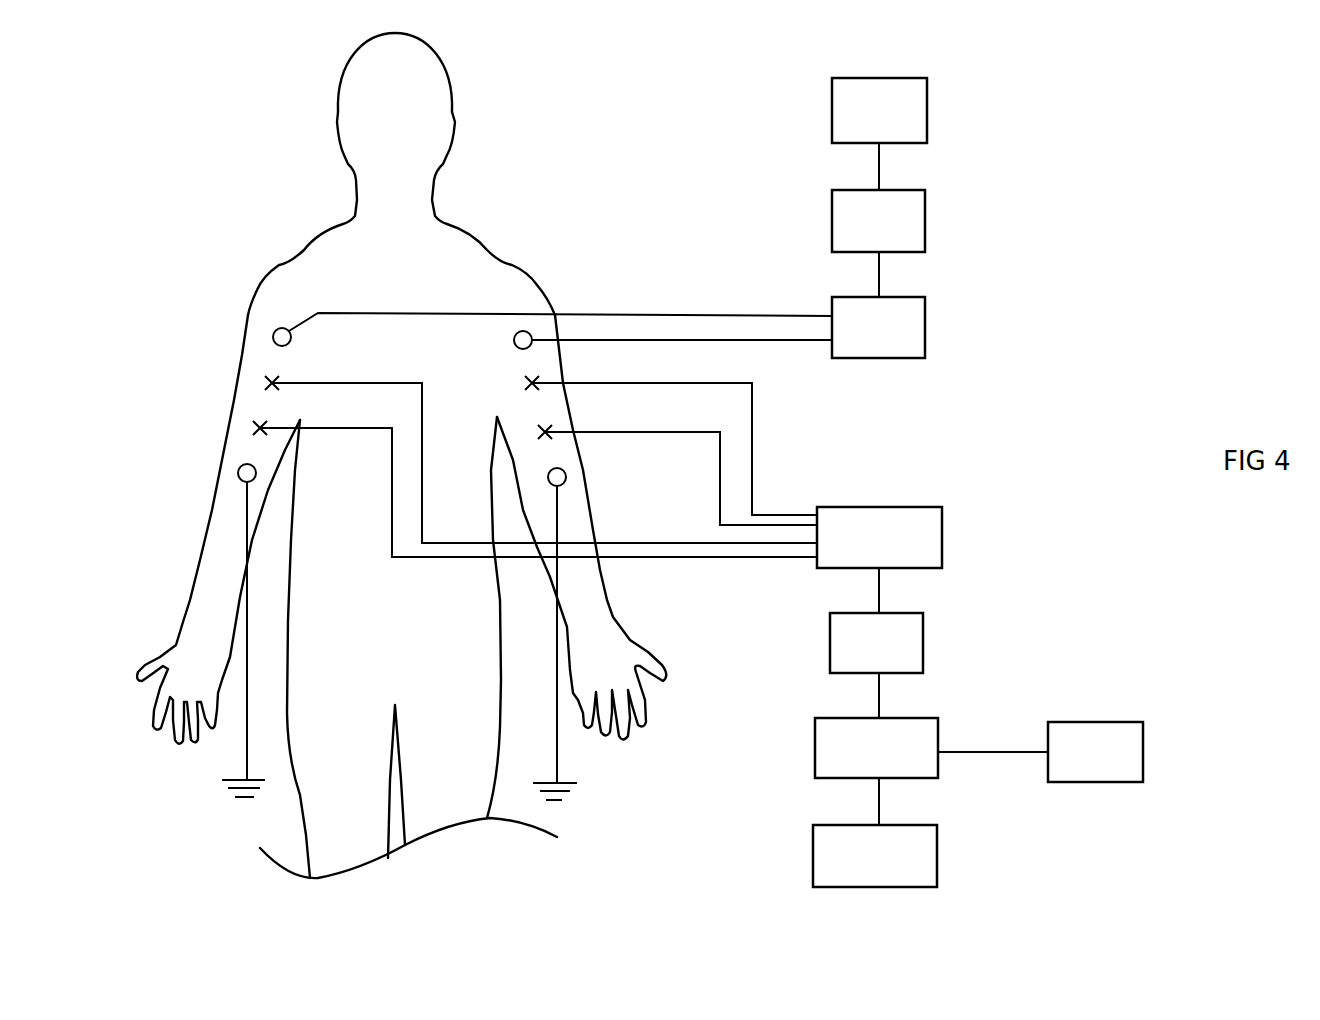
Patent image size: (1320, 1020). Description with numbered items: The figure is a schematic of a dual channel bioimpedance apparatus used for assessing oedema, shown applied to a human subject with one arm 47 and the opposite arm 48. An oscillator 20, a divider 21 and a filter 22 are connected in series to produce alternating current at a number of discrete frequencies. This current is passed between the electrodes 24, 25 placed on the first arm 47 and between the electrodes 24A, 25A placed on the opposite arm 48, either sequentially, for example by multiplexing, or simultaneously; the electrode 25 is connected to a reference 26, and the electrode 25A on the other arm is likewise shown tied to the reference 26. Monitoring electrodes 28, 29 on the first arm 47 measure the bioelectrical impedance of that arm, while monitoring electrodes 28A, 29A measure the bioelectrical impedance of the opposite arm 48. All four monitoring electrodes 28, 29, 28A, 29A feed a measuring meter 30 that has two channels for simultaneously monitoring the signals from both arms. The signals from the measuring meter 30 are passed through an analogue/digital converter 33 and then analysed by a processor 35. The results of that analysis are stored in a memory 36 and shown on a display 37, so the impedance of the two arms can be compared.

The oscillator 20 is at (928, 113).
The divider 21 is at (926, 221).
The filter 22 is at (926, 330).
The electrode 24 is at (272, 332).
The electrode 24A is at (530, 333).
The electrode 25 is at (238, 472).
The electrode 25A is at (567, 473).
The reference 26 is at (230, 790).
The monitoring electrode 28 is at (265, 378).
The monitoring electrode 28A is at (540, 382).
The monitoring electrode 29 is at (253, 428).
The monitoring electrode 29A is at (548, 430).
The measuring meter 30 is at (943, 538).
The analogue/digital converter 33 is at (924, 645).
The processor 35 is at (815, 755).
The memory 36 is at (1144, 752).
The display 37 is at (938, 858).
The arm 47 is at (212, 566).
The arm 48 is at (592, 567).